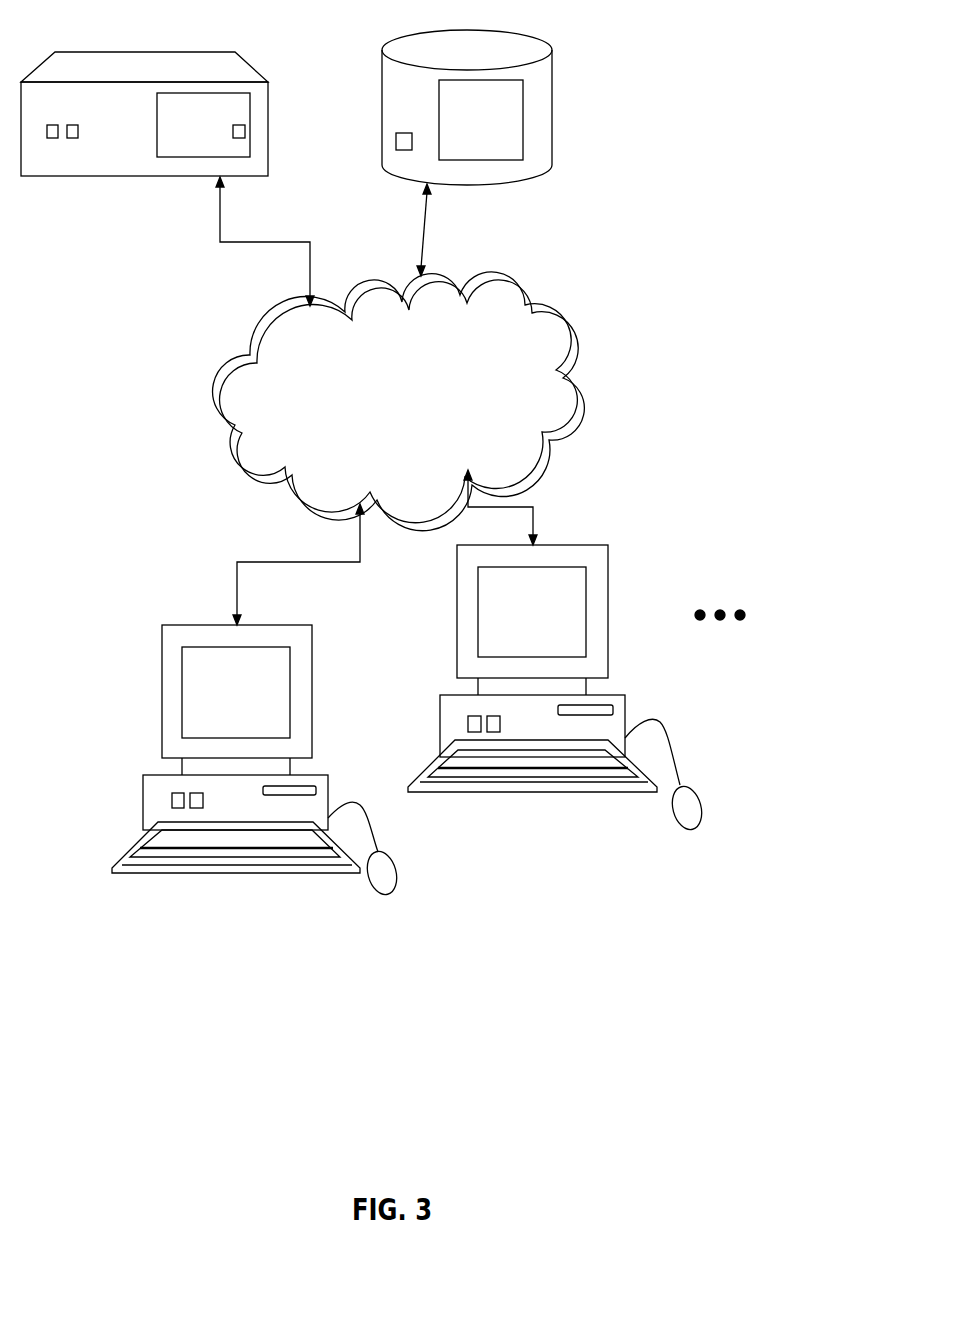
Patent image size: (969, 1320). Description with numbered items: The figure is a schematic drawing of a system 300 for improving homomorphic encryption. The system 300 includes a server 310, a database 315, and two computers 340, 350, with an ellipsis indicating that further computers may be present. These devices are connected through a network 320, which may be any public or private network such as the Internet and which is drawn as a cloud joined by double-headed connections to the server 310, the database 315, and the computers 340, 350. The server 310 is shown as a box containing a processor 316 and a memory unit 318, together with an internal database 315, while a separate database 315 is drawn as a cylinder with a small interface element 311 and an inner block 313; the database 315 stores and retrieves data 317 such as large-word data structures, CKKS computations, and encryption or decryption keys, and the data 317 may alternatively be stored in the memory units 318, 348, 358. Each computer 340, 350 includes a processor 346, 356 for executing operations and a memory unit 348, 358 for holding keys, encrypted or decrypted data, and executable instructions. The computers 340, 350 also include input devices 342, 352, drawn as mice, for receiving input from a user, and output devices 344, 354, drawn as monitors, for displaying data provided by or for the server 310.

The system 300 is at (618, 182).
The server 310 is at (160, 72).
The interface port 311 is at (396, 142).
The database 313 is at (495, 116).
The database 315 is at (210, 136).
The processor 316 is at (52, 139).
The data 317 is at (240, 139).
The memory unit 318 is at (73, 125).
The network 320 is at (399, 401).
The computer 340 is at (200, 625).
The input device 342 is at (387, 854).
The output device 344 is at (272, 690).
The processor 346 is at (172, 800).
The memory unit 348 is at (191, 795).
The computer 350 is at (600, 545).
The input device 352 is at (690, 785).
The output device 354 is at (563, 611).
The processor 356 is at (468, 724).
The memory unit 358 is at (479, 716).